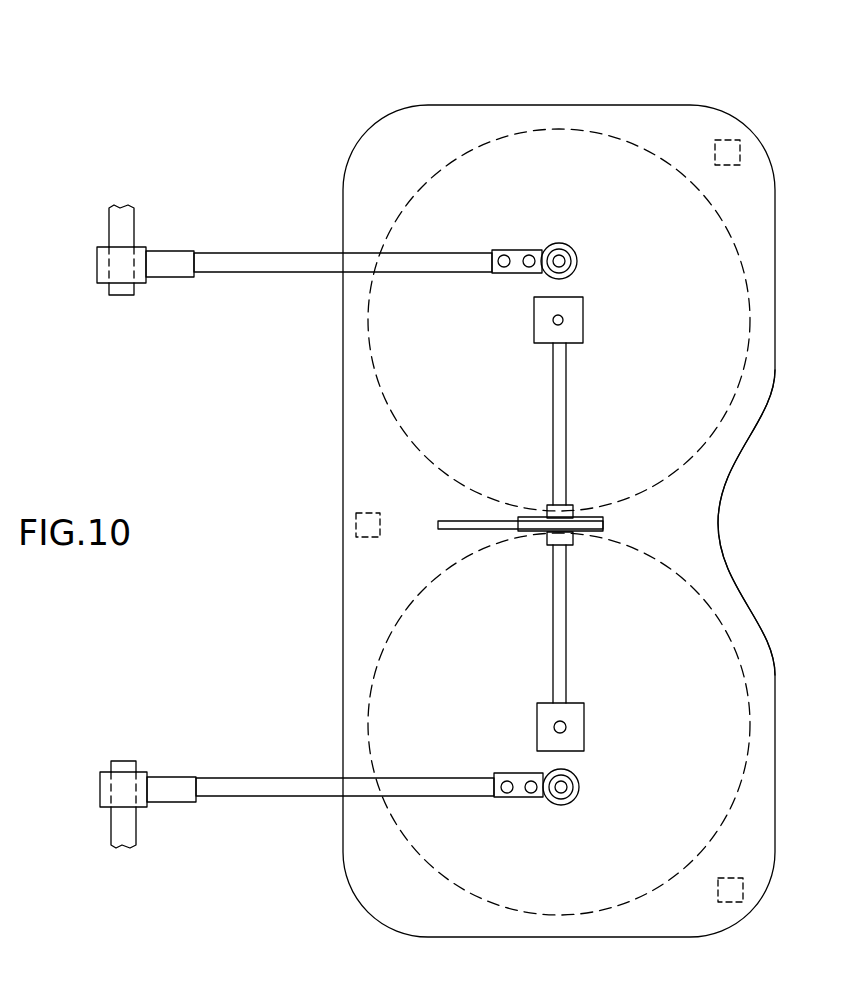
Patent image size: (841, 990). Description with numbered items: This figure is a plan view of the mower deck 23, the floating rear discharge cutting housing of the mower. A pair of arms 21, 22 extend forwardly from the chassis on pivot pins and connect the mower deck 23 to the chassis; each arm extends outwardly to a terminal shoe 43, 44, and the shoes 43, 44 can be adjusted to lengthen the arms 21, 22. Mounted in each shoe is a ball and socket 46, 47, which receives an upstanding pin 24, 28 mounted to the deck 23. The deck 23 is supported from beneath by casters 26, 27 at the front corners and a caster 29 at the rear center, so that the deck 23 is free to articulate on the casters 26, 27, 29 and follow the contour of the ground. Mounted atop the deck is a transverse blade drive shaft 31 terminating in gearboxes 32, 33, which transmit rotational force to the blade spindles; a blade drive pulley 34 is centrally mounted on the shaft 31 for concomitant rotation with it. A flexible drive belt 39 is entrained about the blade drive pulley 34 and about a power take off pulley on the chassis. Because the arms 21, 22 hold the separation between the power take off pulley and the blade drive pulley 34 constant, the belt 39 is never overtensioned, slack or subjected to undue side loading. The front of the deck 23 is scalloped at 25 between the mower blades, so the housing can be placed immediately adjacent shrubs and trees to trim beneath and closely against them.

The arm 21 is at (243, 783).
The arm 22 is at (253, 253).
The mower deck 23 is at (628, 100).
The upstanding pin 24 is at (568, 787).
The scalloped front of deck 25 is at (718, 523).
The corner caster 26 is at (728, 895).
The corner caster 27 is at (728, 140).
The upstanding pin 28 is at (566, 262).
The caster 29 is at (356, 537).
The transverse blade drive shaft 31 is at (558, 423).
The gearbox 32 is at (580, 715).
The gearbox 33 is at (575, 308).
The blade drive pulley 34 is at (595, 531).
The flexible drive belt 39 is at (497, 530).
The terminal shoe 43 is at (518, 798).
The terminal shoe 44 is at (517, 255).
The ball and socket 46 is at (565, 805).
The ball and socket 47 is at (563, 258).